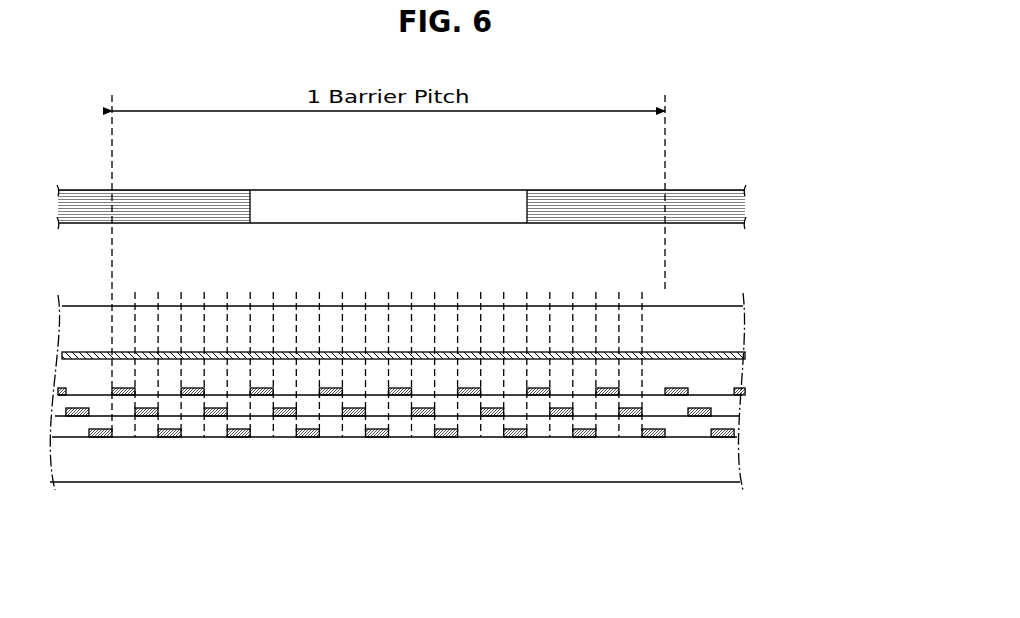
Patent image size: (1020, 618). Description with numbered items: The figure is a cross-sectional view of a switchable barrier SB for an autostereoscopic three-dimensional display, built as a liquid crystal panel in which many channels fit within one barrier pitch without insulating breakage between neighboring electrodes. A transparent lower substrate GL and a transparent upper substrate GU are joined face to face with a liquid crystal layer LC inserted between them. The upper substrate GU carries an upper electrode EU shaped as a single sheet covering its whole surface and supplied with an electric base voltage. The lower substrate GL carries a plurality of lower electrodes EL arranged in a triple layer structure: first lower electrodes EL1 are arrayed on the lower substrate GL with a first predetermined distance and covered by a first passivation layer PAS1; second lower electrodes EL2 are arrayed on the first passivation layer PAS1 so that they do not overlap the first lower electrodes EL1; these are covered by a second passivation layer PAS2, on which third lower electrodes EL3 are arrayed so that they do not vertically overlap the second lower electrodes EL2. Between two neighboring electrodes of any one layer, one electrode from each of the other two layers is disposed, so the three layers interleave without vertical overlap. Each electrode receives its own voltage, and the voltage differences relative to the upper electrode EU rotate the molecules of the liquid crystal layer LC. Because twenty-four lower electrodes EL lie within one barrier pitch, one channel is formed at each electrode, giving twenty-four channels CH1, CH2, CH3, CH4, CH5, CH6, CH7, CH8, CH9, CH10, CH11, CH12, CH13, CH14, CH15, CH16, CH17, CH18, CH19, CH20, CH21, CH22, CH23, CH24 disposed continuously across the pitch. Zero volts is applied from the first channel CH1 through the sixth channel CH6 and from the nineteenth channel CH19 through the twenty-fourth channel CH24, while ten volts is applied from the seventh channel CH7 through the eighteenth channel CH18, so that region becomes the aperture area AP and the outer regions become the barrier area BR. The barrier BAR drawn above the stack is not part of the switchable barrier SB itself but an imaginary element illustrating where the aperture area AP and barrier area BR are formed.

The barrier BAR is at (450, 183).
The aperture area AP is at (345, 197).
The barrier area BR is at (567, 197).
The first channel CH1 is at (123, 266).
The second channel CH2 is at (146, 334).
The third channel CH3 is at (169, 343).
The fourth channel CH4 is at (192, 353).
The fifth channel CH5 is at (215, 334).
The sixth channel CH6 is at (238, 343).
The seventh channel CH7 is at (261, 353).
The eighth channel CH8 is at (284, 334).
The ninth channel CH9 is at (307, 343).
The tenth channel CH10 is at (330, 353).
The eleventh channel CH11 is at (353, 334).
The twelfth channel CH12 is at (377, 343).
The thirteenth channel CH13 is at (400, 353).
The fourteenth channel CH14 is at (423, 334).
The fifteenth channel CH15 is at (446, 343).
The sixteenth channel CH16 is at (469, 353).
The seventeenth channel CH17 is at (492, 334).
The eighteenth channel CH18 is at (515, 343).
The nineteenth channel CH19 is at (538, 353).
The twentieth channel CH20 is at (561, 334).
The twenty-first channel CH21 is at (584, 343).
The twenty-second channel CH22 is at (607, 353).
The twenty-third channel CH23 is at (630, 334).
The twenty-fourth channel CH24 is at (653, 343).
The upper substrate GU is at (743, 324).
The upper electrode EU is at (745, 355).
The liquid crystal layer LC is at (740, 379).
The switchable barrier SB is at (434, 432).
The lower electrodes EL is at (401, 479).
The first lower electrodes EL1 is at (247, 535).
The second lower electrodes EL2 is at (217, 417).
The third lower electrodes EL3 is at (195, 395).
The lower substrate GL is at (327, 470).
The first passivation layer PAS1 is at (402, 430).
The second passivation layer PAS2 is at (468, 410).